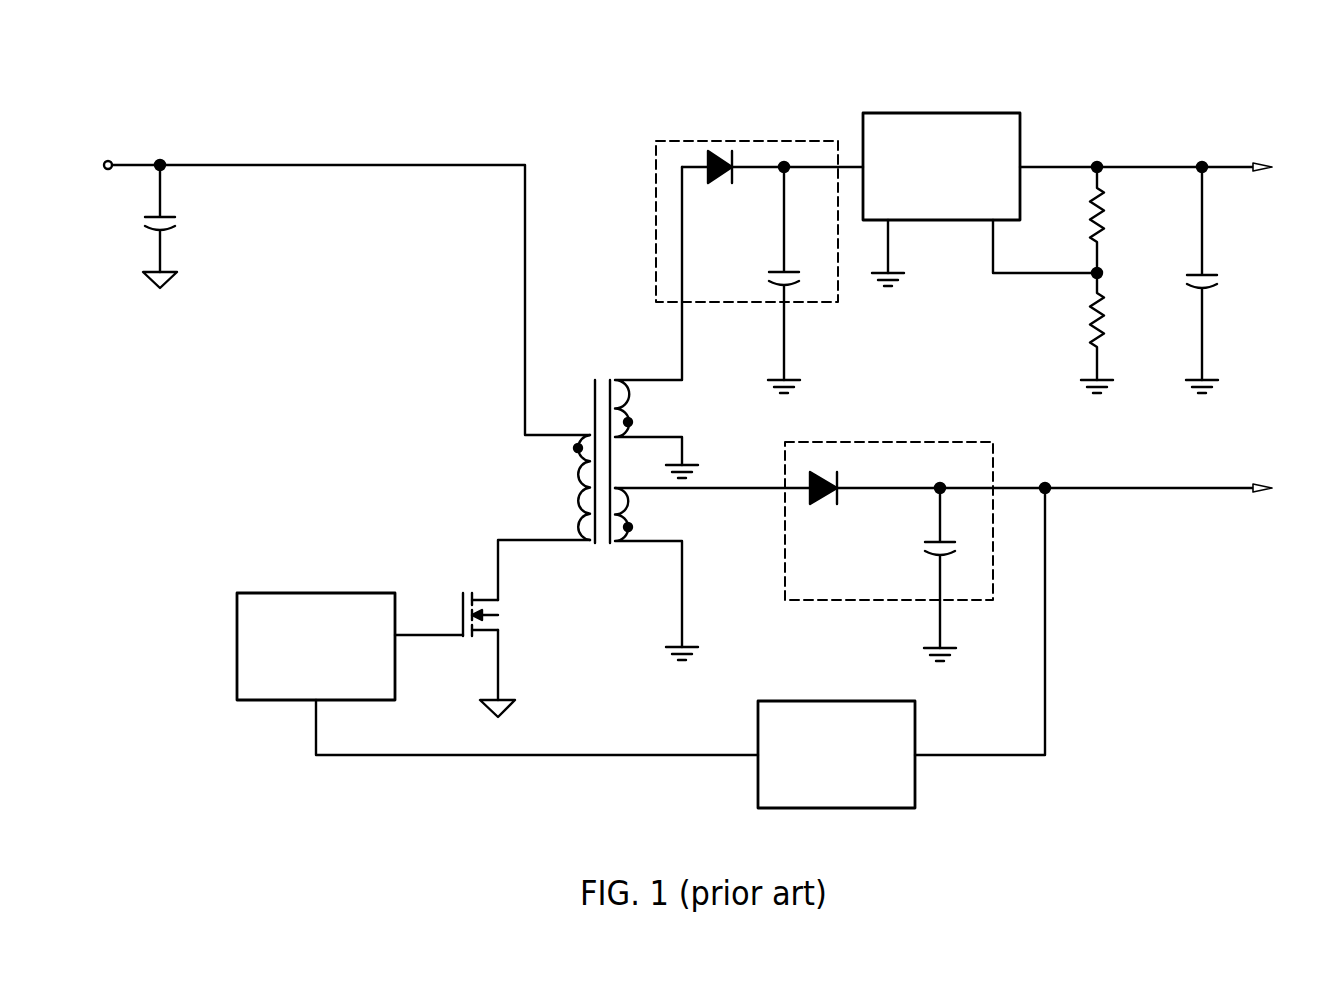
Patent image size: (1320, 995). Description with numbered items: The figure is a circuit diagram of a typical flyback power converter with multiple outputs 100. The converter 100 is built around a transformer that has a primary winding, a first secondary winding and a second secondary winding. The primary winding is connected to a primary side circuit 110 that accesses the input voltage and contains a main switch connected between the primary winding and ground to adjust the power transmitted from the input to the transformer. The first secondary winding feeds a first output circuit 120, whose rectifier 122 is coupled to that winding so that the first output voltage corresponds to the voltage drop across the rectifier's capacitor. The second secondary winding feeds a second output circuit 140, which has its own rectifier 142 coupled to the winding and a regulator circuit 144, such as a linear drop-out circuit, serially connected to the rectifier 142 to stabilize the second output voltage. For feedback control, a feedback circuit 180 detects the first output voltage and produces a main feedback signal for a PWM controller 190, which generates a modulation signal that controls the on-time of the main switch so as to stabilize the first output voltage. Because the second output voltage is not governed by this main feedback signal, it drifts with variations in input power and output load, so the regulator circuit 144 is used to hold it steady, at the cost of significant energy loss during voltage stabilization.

The flyback power converter with multiple outputs 100 is at (723, 68).
The primary side circuit 110 is at (353, 153).
The first output circuit 120 is at (1088, 459).
The rectifier 122 is at (915, 442).
The second output circuit 140 is at (1158, 127).
The rectifier 142 is at (757, 141).
The regulator circuit 144 is at (965, 113).
The feedback circuit 180 is at (838, 701).
The PWM controller 190 is at (343, 593).